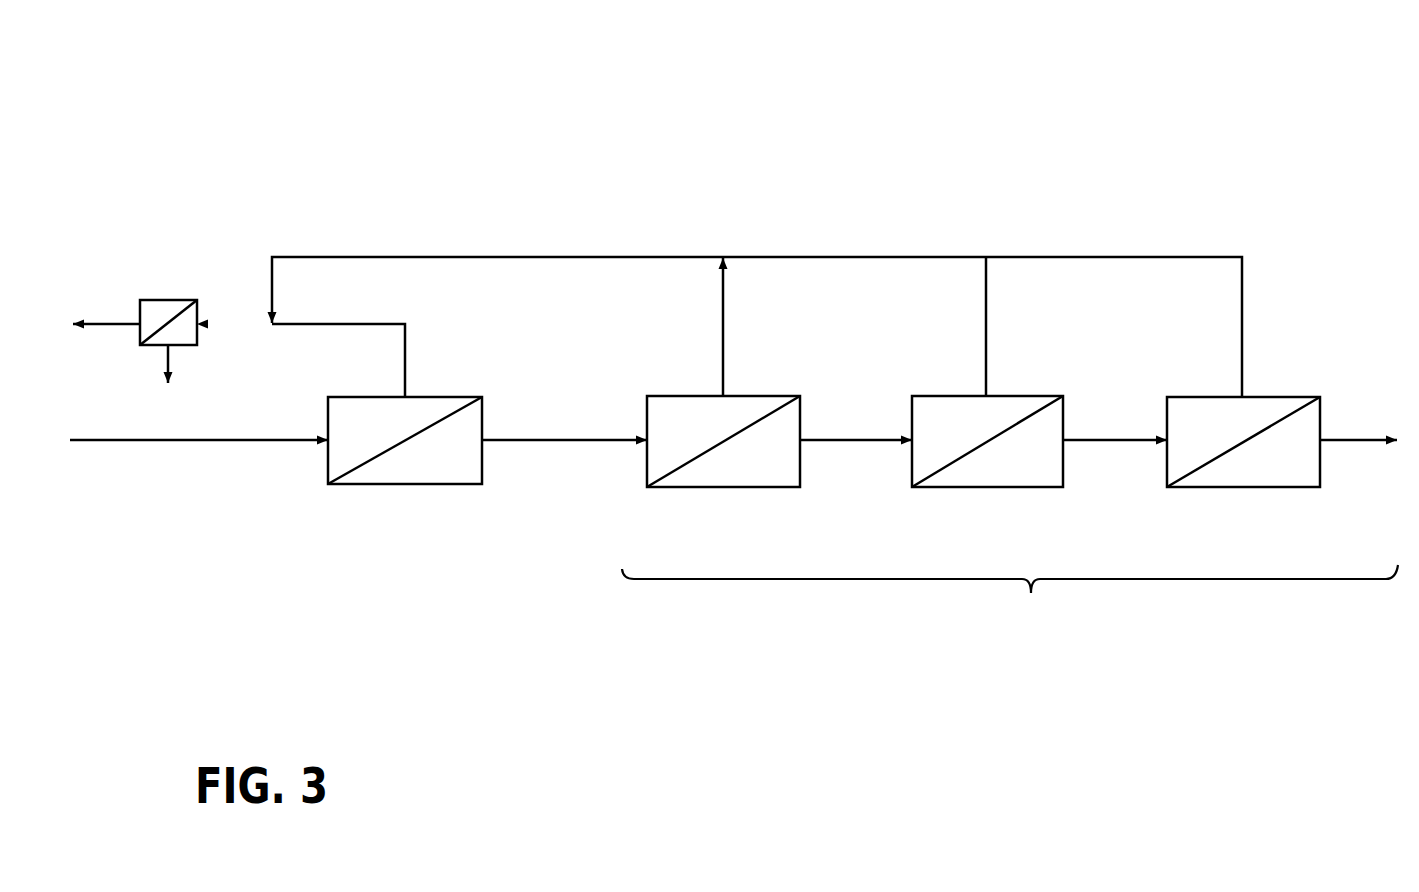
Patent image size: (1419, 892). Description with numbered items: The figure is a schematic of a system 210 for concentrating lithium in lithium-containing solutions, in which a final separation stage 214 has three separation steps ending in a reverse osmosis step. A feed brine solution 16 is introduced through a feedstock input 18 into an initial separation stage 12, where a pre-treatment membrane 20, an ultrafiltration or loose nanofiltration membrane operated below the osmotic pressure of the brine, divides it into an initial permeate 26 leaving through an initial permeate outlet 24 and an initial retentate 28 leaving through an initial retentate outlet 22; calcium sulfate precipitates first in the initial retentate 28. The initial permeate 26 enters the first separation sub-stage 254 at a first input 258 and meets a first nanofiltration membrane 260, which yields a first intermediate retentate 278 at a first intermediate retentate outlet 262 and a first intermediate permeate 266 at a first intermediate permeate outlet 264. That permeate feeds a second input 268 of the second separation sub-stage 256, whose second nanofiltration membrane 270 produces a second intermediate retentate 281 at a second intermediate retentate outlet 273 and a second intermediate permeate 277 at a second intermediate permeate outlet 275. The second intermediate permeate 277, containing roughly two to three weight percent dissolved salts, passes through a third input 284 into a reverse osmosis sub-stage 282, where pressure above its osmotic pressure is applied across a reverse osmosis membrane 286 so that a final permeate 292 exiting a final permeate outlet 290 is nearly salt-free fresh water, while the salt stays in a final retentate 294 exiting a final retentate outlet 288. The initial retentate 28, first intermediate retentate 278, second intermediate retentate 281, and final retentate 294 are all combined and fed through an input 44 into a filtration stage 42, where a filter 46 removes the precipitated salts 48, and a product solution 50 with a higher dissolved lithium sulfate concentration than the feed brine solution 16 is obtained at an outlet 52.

The initial separation stage 12 is at (394, 488).
The feed brine solution 16 is at (220, 442).
The feedstock input 18 is at (327, 444).
The pre-treatment membrane 20 is at (408, 442).
The initial retentate outlet 22 is at (407, 395).
The initial permeate outlet 24 is at (483, 442).
The initial permeate 26 is at (550, 443).
The initial retentate 28 is at (405, 352).
The filtration stage 42 is at (168, 296).
The input 44 is at (199, 322).
The filter 46 is at (168, 325).
The precipitated salts 48 is at (165, 352).
The product solution 50 is at (103, 323).
The outlet 52 is at (138, 325).
The system 210 is at (644, 140).
The final separation stage 214 is at (1010, 596).
The first separation sub-stage 254 is at (724, 490).
The second separation sub-stage 256 is at (985, 490).
The first input 258 is at (645, 442).
The first nanofiltration membrane 260 is at (728, 440).
The first intermediate retentate outlet 262 is at (723, 396).
The first intermediate permeate outlet 264 is at (802, 437).
The first intermediate permeate 266 is at (817, 442).
The second input 268 is at (910, 442).
The second nanofiltration membrane 270 is at (992, 438).
The second intermediate retentate outlet 273 is at (986, 396).
The second intermediate permeate outlet 275 is at (1065, 437).
The second intermediate permeate 277 is at (1080, 442).
The first intermediate retentate 278 is at (725, 322).
The second intermediate retentate 281 is at (988, 322).
The reverse osmosis sub-stage 282 is at (1242, 490).
The third input 284 is at (1165, 440).
The reverse osmosis membrane 286 is at (1248, 440).
The final retentate outlet 288 is at (1242, 397).
The final permeate outlet 290 is at (1320, 438).
The final permeate 292 is at (1355, 440).
The final retentate 294 is at (1243, 303).